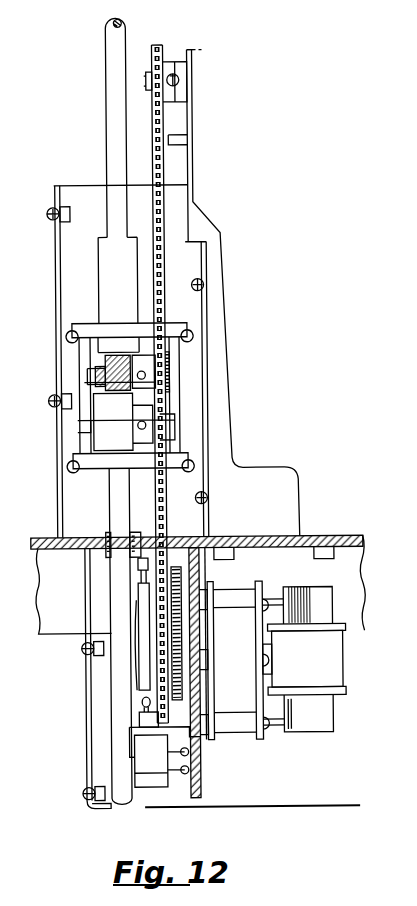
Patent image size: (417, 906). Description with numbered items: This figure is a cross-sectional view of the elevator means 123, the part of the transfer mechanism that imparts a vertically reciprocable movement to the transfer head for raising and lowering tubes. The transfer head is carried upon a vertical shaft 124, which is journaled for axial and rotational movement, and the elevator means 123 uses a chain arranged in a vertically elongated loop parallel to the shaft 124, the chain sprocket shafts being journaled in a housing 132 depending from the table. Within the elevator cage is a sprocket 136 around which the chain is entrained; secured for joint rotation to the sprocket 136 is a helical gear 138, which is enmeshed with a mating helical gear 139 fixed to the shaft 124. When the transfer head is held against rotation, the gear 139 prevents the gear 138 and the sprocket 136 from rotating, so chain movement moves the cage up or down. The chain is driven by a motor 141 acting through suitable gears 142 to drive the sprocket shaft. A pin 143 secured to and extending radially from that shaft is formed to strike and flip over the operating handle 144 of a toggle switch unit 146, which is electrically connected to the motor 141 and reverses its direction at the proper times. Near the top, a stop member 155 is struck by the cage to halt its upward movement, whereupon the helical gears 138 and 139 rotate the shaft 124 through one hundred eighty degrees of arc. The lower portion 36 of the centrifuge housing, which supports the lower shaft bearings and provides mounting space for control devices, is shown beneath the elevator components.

The vertical shaft 124 is at (106, 86).
The stop member 155 is at (182, 135).
The housing 132 is at (190, 263).
The elevator means 123 is at (238, 385).
The sprocket 136 is at (170, 352).
The helical gear 139 is at (104, 366).
The helical gear 138 is at (107, 404).
The lower portion of housing 36 is at (258, 502).
The pin 143 is at (137, 573).
The gears 142 is at (181, 585).
The motor 141 is at (316, 668).
The operating handle 144 is at (141, 712).
The toggle switch unit 146 is at (147, 783).